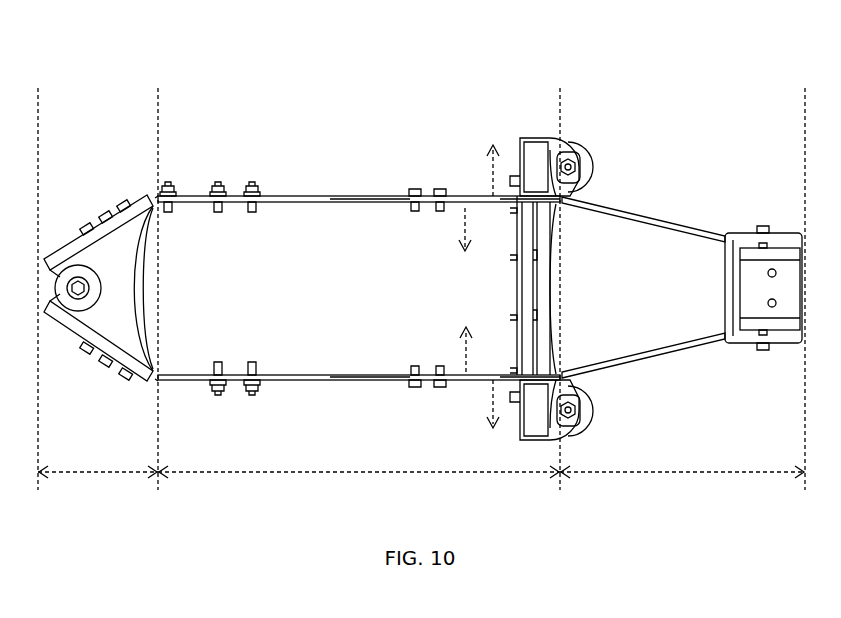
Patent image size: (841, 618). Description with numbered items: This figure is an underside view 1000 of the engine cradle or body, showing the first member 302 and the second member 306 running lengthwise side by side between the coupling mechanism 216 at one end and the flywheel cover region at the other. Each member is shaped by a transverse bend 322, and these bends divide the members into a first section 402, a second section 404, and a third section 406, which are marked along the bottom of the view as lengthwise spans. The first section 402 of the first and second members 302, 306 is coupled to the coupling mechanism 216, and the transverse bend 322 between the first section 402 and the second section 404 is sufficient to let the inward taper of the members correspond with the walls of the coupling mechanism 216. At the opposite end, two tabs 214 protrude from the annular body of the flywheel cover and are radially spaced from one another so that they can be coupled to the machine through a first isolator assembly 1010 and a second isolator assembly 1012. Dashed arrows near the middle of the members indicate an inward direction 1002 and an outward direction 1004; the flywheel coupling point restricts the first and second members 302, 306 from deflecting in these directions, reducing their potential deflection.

The underside view 1000 is at (50, 70).
The coupling mechanism 216 is at (60, 232).
The first member 302 is at (329, 196).
The second member 306 is at (328, 375).
The transverse bend 322 is at (160, 204).
The inward direction 1002 is at (466, 352).
The outward direction 1004 is at (493, 172).
The first isolator assembly 1010 is at (578, 133).
The second isolator assembly 1012 is at (584, 440).
The tab 214 is at (580, 167).
The first section 402 is at (94, 475).
The second section 404 is at (345, 475).
The third section 406 is at (670, 475).